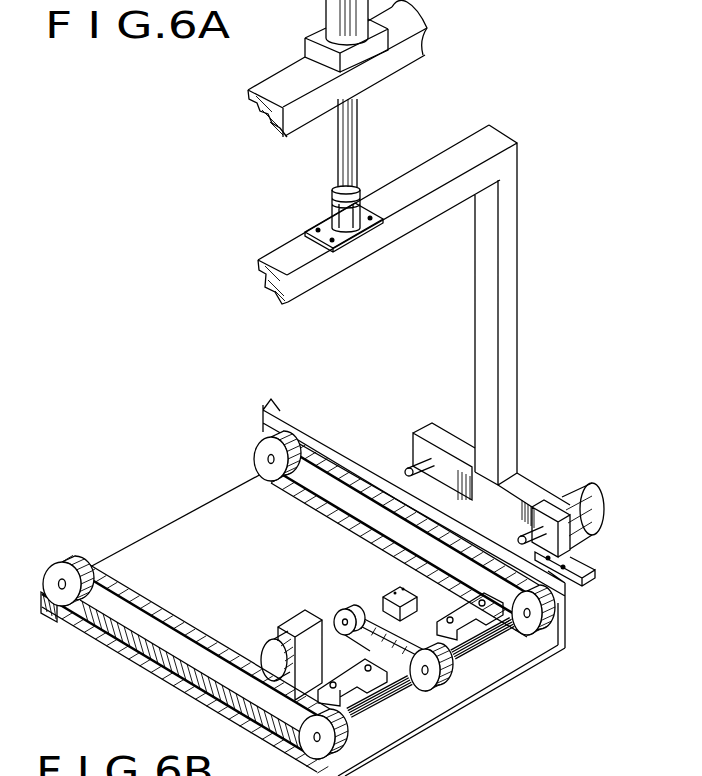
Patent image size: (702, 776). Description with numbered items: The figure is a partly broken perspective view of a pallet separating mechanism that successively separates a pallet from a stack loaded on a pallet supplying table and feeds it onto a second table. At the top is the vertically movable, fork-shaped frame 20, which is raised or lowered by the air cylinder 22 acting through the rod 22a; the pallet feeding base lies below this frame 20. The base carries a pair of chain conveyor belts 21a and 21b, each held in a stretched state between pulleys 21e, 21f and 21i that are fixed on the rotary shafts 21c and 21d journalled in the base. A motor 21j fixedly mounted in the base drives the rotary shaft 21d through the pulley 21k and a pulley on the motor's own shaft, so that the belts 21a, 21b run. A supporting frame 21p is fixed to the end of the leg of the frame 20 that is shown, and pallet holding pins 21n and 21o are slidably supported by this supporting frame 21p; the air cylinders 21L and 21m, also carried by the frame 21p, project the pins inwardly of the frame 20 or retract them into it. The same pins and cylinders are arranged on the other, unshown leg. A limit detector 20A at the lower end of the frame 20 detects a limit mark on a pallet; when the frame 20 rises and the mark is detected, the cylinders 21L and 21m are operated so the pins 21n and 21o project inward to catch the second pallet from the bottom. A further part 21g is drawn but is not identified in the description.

The vertically movable frame 20 is at (519, 300).
The limit detector 20A is at (596, 564).
The chain conveyor belt 21a is at (153, 618).
The chain conveyor belt 21b is at (370, 495).
The rotary shaft 21c is at (143, 536).
The rotary shaft 21d is at (470, 654).
The pulley 21e is at (53, 595).
The pulley 21f is at (258, 462).
The bracket 21g is at (495, 630).
The pulley 21i is at (536, 628).
The motor 21j is at (265, 635).
The pulley 21k is at (432, 686).
The air cylinder 21L is at (597, 491).
The air cylinder 21m is at (458, 428).
The pallet holding pin 21n is at (533, 507).
The pallet holding pin 21o is at (407, 465).
The supporting frame 21p is at (519, 482).
The air cylinder 22 is at (342, 14).
The rod 22a is at (357, 125).